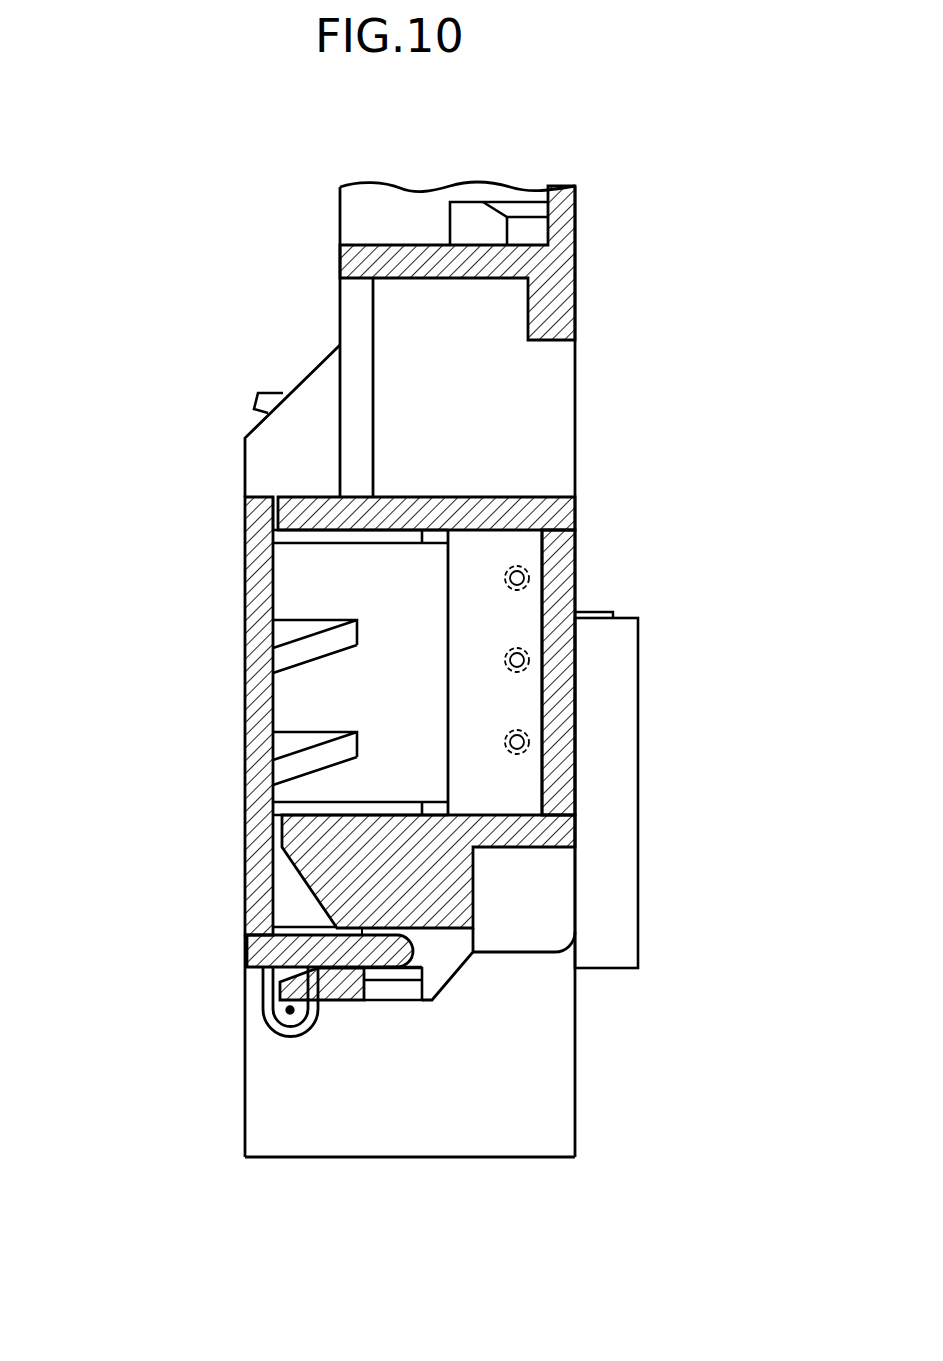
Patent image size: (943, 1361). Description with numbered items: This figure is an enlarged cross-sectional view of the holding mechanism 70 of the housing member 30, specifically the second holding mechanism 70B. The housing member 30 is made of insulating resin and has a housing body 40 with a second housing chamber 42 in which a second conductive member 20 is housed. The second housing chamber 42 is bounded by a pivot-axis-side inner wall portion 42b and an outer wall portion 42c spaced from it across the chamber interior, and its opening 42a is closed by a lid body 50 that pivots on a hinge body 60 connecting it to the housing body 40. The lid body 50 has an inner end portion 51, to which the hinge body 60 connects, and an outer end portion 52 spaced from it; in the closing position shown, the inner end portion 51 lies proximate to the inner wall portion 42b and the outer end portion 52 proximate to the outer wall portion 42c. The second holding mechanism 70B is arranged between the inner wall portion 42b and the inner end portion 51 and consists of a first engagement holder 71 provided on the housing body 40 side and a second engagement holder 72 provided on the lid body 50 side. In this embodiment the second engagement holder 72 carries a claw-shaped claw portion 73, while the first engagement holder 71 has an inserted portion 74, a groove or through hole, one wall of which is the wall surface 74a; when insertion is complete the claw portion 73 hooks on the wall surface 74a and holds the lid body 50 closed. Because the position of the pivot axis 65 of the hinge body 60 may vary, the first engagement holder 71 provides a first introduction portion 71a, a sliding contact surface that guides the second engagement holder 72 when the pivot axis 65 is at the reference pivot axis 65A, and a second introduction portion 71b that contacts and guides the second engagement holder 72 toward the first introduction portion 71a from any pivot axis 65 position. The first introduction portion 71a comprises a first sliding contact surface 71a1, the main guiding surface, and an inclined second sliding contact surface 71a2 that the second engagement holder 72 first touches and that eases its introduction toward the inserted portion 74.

The housing member 30 is at (470, 163).
The housing body 40 is at (578, 233).
The outer end portion 52 is at (245, 516).
The lid body 50 is at (262, 733).
The inner end portion 51 is at (247, 960).
The second housing chamber 42 is at (424, 672).
The opening 42a is at (282, 599).
The inner wall portion 42b is at (309, 815).
The outer wall portion 42c is at (323, 540).
The second conductive member 20 is at (542, 742).
The second introduction portion 71b is at (300, 873).
The first introduction portion 71a is at (230, 923).
The first sliding contact surface 71a1 is at (273, 921).
The second sliding contact surface 71a2 is at (275, 948).
The hinge body 60 is at (247, 990).
The reference pivot axis 65A is at (230, 1090).
The pivot axis 65 is at (287, 1015).
The first engagement holder 71 is at (449, 1110).
The second engagement holder 72 is at (520, 1070).
The claw portion 73 is at (372, 988).
The inserted portion 74 is at (548, 966).
The wall surface 74a is at (395, 988).
The second holding mechanism 70B is at (488, 1098).
The holding mechanism 70 is at (494, 1070).